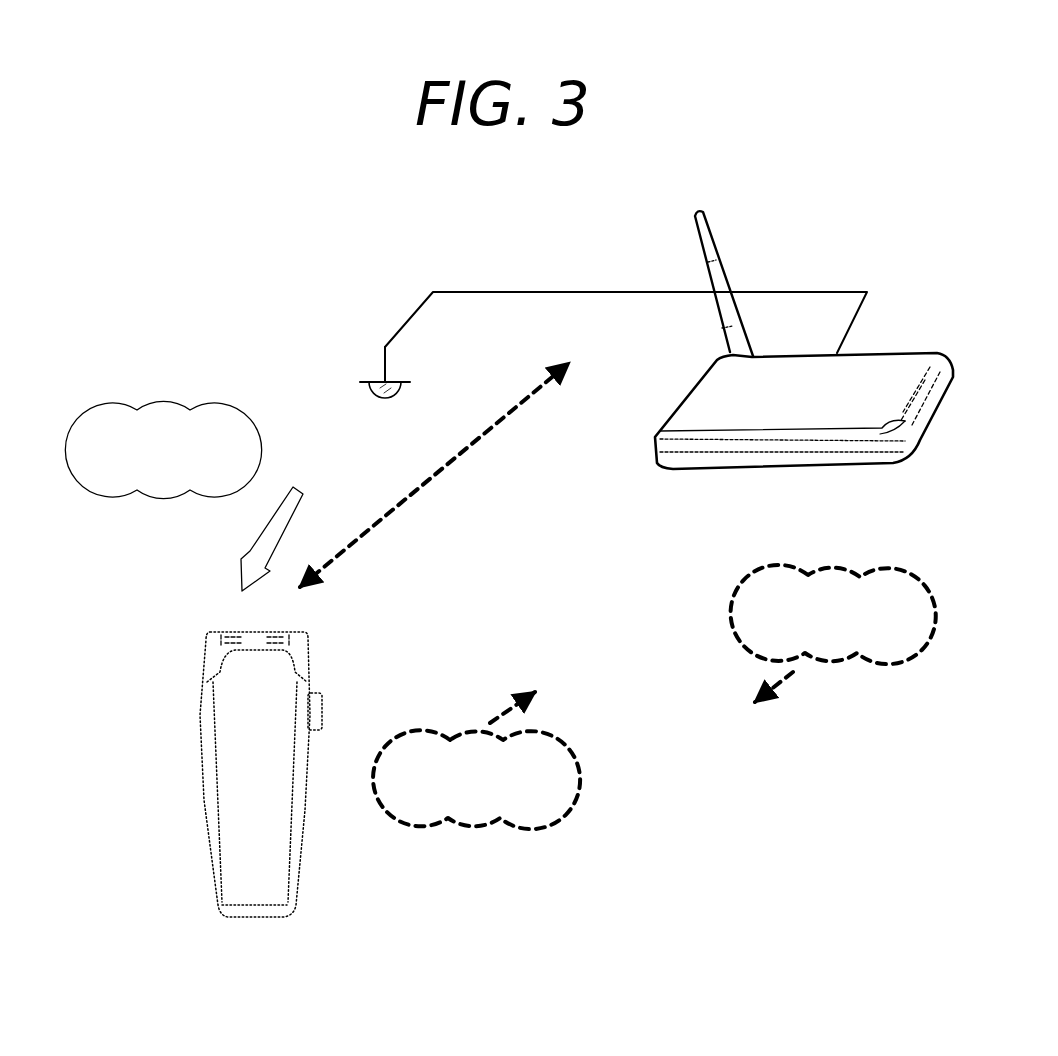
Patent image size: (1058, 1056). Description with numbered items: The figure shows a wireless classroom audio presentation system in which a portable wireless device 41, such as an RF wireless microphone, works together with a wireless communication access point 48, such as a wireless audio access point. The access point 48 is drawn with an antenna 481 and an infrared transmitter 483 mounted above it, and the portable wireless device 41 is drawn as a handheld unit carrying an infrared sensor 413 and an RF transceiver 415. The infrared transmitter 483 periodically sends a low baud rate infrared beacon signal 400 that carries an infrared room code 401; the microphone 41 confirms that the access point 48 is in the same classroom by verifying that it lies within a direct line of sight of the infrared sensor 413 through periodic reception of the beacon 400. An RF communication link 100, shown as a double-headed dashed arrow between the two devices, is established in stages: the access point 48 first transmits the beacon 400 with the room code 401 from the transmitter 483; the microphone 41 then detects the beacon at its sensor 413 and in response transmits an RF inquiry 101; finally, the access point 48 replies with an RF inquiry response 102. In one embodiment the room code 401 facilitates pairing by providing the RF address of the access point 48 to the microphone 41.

The portable wireless device 41 is at (302, 892).
The infrared sensor 413 is at (207, 640).
The RF transceiver 415 is at (303, 642).
The infrared beacon signal 400 is at (257, 545).
The infrared (IR) Room Code 401 is at (165, 402).
The wireless communication access point 48 is at (815, 468).
The antenna 481 is at (693, 218).
The infrared transmitter 483 is at (363, 382).
The RF communication link 100 is at (507, 417).
The RF inquiry 101 is at (542, 822).
The RF inquiry response 102 is at (767, 573).